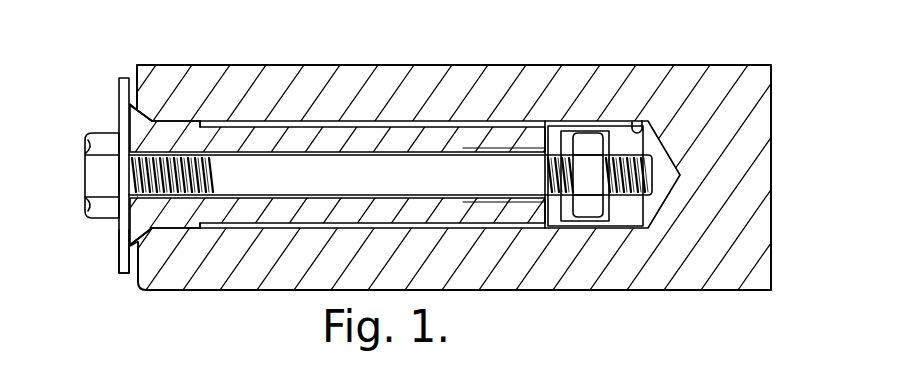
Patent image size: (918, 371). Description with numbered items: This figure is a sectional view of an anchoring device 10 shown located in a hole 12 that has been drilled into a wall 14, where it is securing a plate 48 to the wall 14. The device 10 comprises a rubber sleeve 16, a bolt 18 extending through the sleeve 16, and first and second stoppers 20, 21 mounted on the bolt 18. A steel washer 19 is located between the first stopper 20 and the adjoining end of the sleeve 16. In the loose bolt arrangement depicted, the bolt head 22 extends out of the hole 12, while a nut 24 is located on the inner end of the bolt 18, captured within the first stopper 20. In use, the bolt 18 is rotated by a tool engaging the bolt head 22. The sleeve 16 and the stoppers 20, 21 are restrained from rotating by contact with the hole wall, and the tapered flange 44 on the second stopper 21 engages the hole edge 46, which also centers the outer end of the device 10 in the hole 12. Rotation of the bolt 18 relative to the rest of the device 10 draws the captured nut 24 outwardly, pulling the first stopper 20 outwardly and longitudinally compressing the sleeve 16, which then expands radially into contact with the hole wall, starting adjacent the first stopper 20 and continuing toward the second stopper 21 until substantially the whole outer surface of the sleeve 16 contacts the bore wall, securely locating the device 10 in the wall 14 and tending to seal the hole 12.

The anchoring device 10 is at (521, 65).
The hole 12 is at (645, 122).
The wall 14 is at (143, 292).
The rubber sleeve 16 is at (412, 127).
The bolt 18 is at (333, 172).
The steel washer 19 is at (525, 228).
The first stopper 20 is at (580, 122).
The second stopper 21 is at (180, 232).
The bolt head 22 is at (88, 143).
The nut 24 is at (595, 217).
The tapered flange 44 is at (128, 236).
The hole edge 46 is at (147, 232).
The plate 48 is at (118, 96).